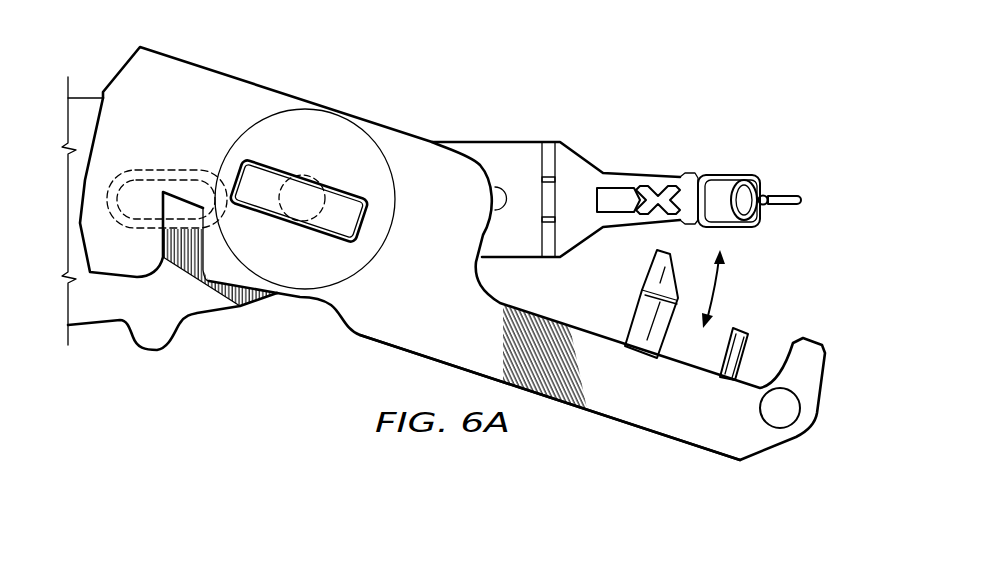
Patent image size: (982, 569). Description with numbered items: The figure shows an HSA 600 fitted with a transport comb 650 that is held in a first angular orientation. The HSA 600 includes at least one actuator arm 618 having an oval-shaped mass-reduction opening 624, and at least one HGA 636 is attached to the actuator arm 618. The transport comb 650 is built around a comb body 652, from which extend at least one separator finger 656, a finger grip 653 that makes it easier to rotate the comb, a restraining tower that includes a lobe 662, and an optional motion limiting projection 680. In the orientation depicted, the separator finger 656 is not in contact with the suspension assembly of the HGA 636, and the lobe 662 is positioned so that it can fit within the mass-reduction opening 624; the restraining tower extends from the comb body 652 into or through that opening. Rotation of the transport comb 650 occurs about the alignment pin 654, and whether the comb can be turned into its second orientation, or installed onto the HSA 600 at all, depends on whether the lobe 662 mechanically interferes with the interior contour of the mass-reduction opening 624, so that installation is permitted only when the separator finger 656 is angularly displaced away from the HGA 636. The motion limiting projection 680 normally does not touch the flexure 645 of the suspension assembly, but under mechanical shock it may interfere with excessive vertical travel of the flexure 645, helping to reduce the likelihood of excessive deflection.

The HSA 600 is at (522, 54).
The actuator arm 618 is at (155, 351).
The mass-reduction opening 624 is at (137, 228).
The lobe 662 is at (175, 175).
The transport comb 650 is at (403, 133).
The comb body 652 is at (370, 339).
The finger grip 653 is at (300, 180).
The alignment pin 654 is at (300, 207).
The HGA 636 is at (582, 155).
The flexure 645 is at (748, 175).
The separator finger 656 is at (635, 315).
The motion limiting projection 680 is at (748, 327).